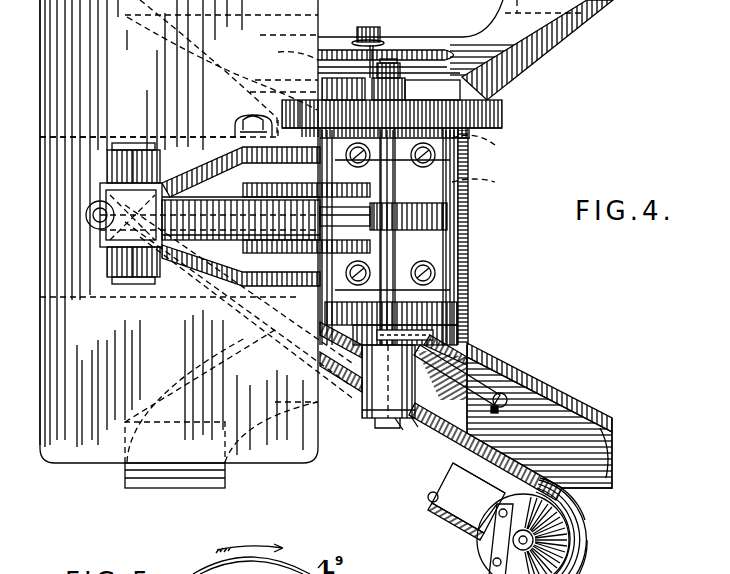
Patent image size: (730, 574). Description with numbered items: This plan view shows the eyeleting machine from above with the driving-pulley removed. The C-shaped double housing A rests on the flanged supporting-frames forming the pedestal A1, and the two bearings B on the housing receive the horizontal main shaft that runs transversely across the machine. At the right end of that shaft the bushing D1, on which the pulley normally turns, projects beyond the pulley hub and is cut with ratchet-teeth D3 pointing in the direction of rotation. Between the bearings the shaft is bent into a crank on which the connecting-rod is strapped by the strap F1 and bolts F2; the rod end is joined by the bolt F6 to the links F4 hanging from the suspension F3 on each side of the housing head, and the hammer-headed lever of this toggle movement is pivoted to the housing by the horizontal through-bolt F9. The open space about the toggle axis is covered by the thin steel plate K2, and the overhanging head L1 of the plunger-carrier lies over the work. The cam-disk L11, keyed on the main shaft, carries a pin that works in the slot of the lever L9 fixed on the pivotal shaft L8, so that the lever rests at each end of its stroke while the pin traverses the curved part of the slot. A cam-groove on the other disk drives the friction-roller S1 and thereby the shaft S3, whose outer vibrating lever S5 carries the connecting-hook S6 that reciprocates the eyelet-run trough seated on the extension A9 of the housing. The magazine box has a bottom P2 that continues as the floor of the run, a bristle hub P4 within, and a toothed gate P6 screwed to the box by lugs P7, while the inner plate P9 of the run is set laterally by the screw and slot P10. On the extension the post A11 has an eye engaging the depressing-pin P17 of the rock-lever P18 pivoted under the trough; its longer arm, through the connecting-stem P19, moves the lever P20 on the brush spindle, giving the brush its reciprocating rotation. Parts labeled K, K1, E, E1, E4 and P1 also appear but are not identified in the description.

The housing panel K is at (60, 470).
The bracket housing K1 is at (90, 233).
The steel cover plate K2 is at (43, 212).
The overhanging head L1 is at (75, 255).
The pivotal shaft L8 is at (388, 60).
The lever L9 is at (338, 48).
The cam-disk L11 is at (498, 108).
The friction-roller S1 is at (280, 104).
The shaft S3 is at (470, 136).
The vibrating lever S5 is at (495, 360).
The connecting-hook S6 is at (505, 375).
The housing A is at (80, 193).
The pedestal A1 is at (563, 40).
The extension A9 is at (392, 422).
The post A11 is at (525, 375).
The bearings B is at (470, 195).
The strap F1 is at (455, 213).
The bolts F2 is at (455, 226).
The suspension F3 is at (115, 282).
The links F4 is at (92, 297).
The bolt F6 is at (148, 288).
The through-bolt F9 is at (278, 352).
The plate E is at (470, 305).
The spring E1 is at (470, 330).
The upper plate E4 is at (460, 290).
The bushing D1 is at (366, 428).
The ratchet-teeth D3 is at (352, 392).
The link P1 is at (442, 471).
The bottom P2 is at (586, 573).
The hub P4 is at (575, 522).
The gate P6 is at (590, 545).
The lugs P7 is at (570, 500).
The inner plate P9 is at (520, 462).
The screw and slot P10 is at (428, 460).
The depressing-pin P17 is at (520, 410).
The rock-lever P18 is at (436, 497).
The connecting-stem P19 is at (455, 525).
The lever P20 is at (487, 521).